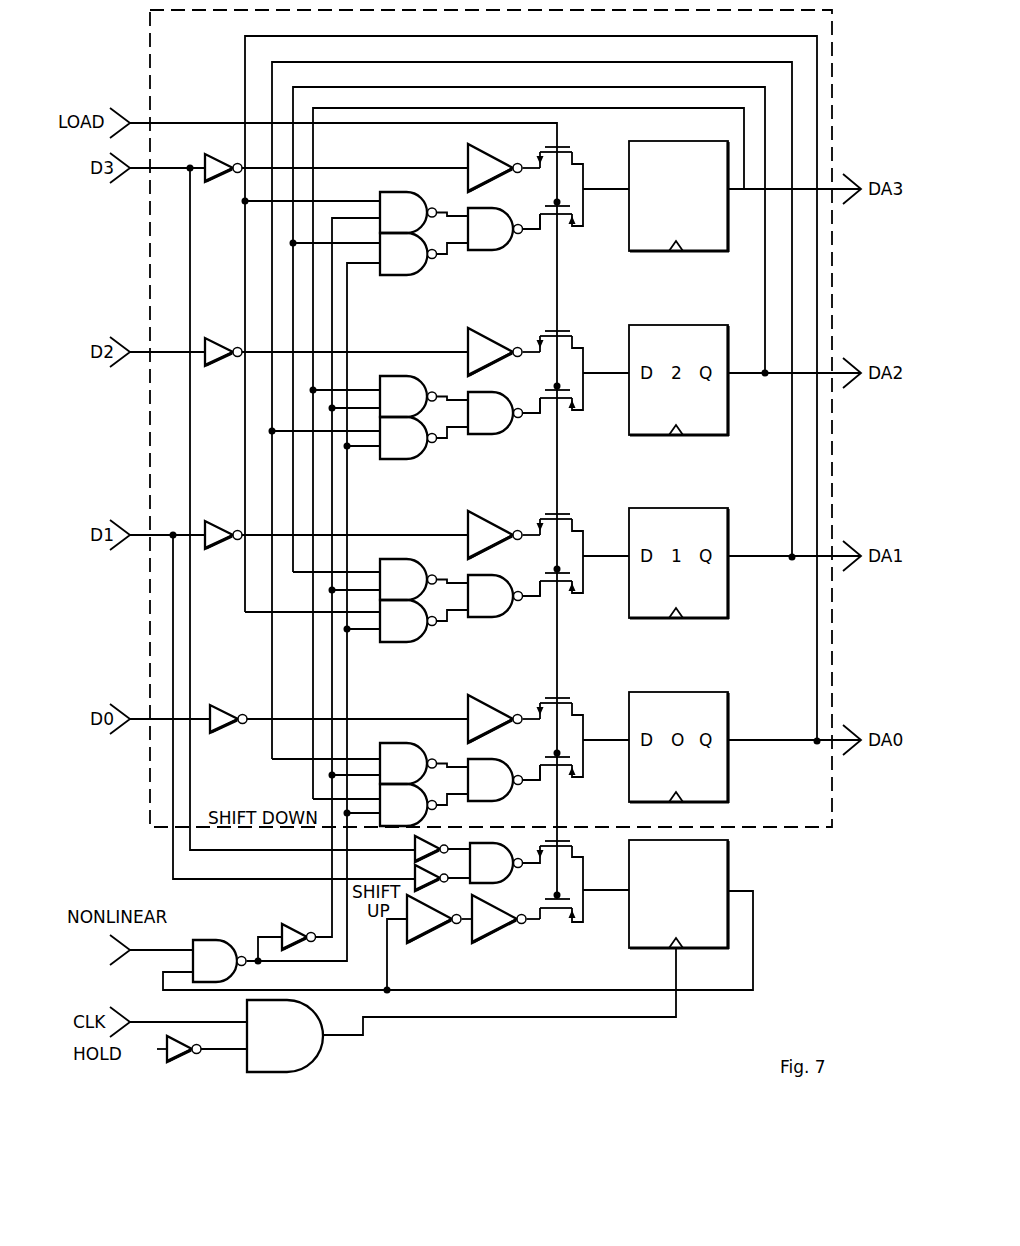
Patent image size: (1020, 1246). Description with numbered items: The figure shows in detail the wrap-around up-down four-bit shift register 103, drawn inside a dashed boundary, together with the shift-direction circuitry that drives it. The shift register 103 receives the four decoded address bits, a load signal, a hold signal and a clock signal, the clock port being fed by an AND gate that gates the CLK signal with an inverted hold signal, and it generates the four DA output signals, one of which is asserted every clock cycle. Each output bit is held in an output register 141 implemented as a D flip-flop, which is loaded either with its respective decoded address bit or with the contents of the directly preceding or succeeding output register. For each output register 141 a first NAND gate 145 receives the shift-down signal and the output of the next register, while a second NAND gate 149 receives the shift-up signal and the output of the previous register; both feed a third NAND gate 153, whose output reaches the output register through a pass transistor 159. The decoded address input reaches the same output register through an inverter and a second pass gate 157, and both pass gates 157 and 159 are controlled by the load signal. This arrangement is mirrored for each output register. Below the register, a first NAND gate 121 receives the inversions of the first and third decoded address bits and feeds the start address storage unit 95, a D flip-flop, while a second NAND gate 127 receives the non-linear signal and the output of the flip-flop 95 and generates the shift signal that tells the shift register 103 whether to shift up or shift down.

The shift register 103 is at (800, 32).
The output register 141 is at (664, 167).
The first NAND gate 145 is at (388, 222).
The second NAND gate 149 is at (388, 264).
The third NAND gate 153 is at (474, 234).
The second pass gate 157 is at (567, 147).
The pass transistor 159 is at (573, 226).
The first NAND gate 121 is at (502, 870).
The second NAND gate 127 is at (228, 970).
The start address storage unit 95 is at (666, 863).